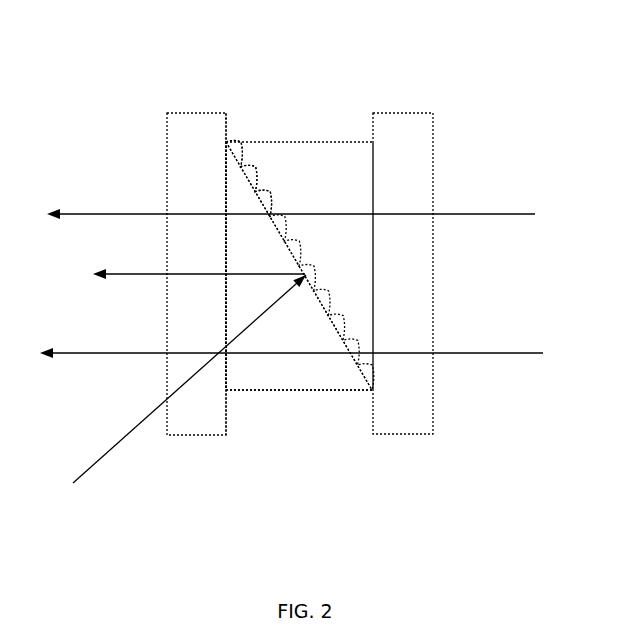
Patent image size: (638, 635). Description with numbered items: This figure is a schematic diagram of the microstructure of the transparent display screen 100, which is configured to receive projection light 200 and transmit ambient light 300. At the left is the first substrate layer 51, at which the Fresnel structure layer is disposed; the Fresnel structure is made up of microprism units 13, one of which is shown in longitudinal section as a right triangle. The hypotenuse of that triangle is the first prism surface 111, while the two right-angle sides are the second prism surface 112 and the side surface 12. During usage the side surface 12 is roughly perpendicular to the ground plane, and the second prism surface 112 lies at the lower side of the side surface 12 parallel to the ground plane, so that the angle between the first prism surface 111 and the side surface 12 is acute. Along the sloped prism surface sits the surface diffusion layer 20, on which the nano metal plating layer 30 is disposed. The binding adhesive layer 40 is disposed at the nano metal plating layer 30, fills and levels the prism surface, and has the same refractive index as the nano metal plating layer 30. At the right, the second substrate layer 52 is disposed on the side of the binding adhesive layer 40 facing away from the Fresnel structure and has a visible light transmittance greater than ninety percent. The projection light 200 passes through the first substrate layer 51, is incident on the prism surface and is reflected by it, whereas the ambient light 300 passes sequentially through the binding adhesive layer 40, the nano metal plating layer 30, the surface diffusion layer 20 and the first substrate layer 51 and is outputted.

The transparent display screen 100 is at (158, 68).
The side surface 12 is at (222, 312).
The microprism unit 13 is at (237, 208).
The surface diffusion layer 20 is at (348, 290).
The nano metal plating layer 30 is at (355, 330).
The binding adhesive layer 40 is at (340, 185).
The first substrate layer 51 is at (208, 418).
The second substrate layer 52 is at (410, 418).
The first prism surface 111 is at (253, 163).
The second prism surface 112 is at (318, 390).
The projection light 200 is at (128, 430).
The ambient light 300 is at (487, 211).